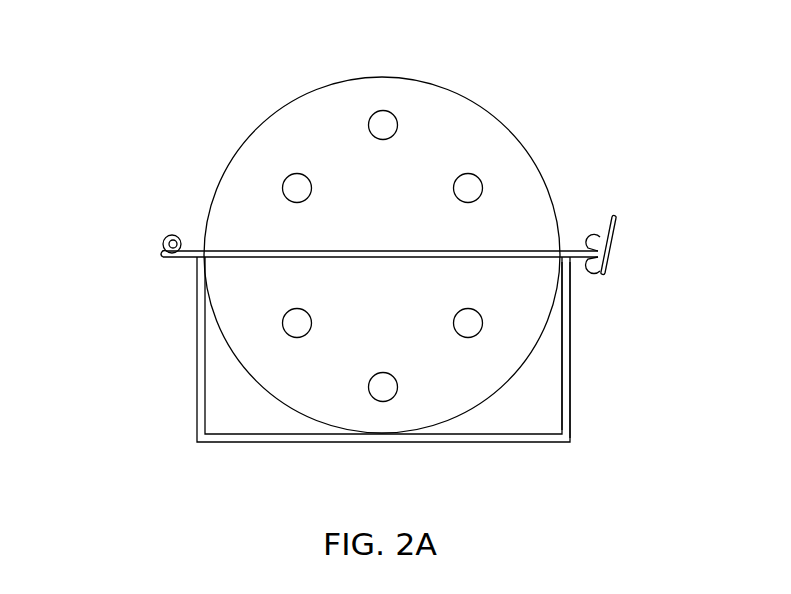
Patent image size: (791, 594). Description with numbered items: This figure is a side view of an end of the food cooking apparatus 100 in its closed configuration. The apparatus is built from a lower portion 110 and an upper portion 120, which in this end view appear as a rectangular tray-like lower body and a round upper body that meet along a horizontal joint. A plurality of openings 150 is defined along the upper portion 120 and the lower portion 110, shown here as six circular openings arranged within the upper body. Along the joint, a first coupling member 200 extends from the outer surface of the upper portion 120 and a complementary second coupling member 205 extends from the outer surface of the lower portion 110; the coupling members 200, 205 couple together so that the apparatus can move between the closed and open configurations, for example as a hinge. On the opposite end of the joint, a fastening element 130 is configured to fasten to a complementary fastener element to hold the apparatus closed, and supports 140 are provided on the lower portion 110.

The food cooking apparatus 100 is at (170, 84).
The lower portion 110 is at (245, 367).
The upper portion 120 is at (483, 107).
The fastening element 130 is at (617, 236).
The supports 140 is at (568, 383).
The openings 150 is at (383, 111).
The first coupling member 200 is at (163, 257).
The second coupling member 205 is at (163, 238).